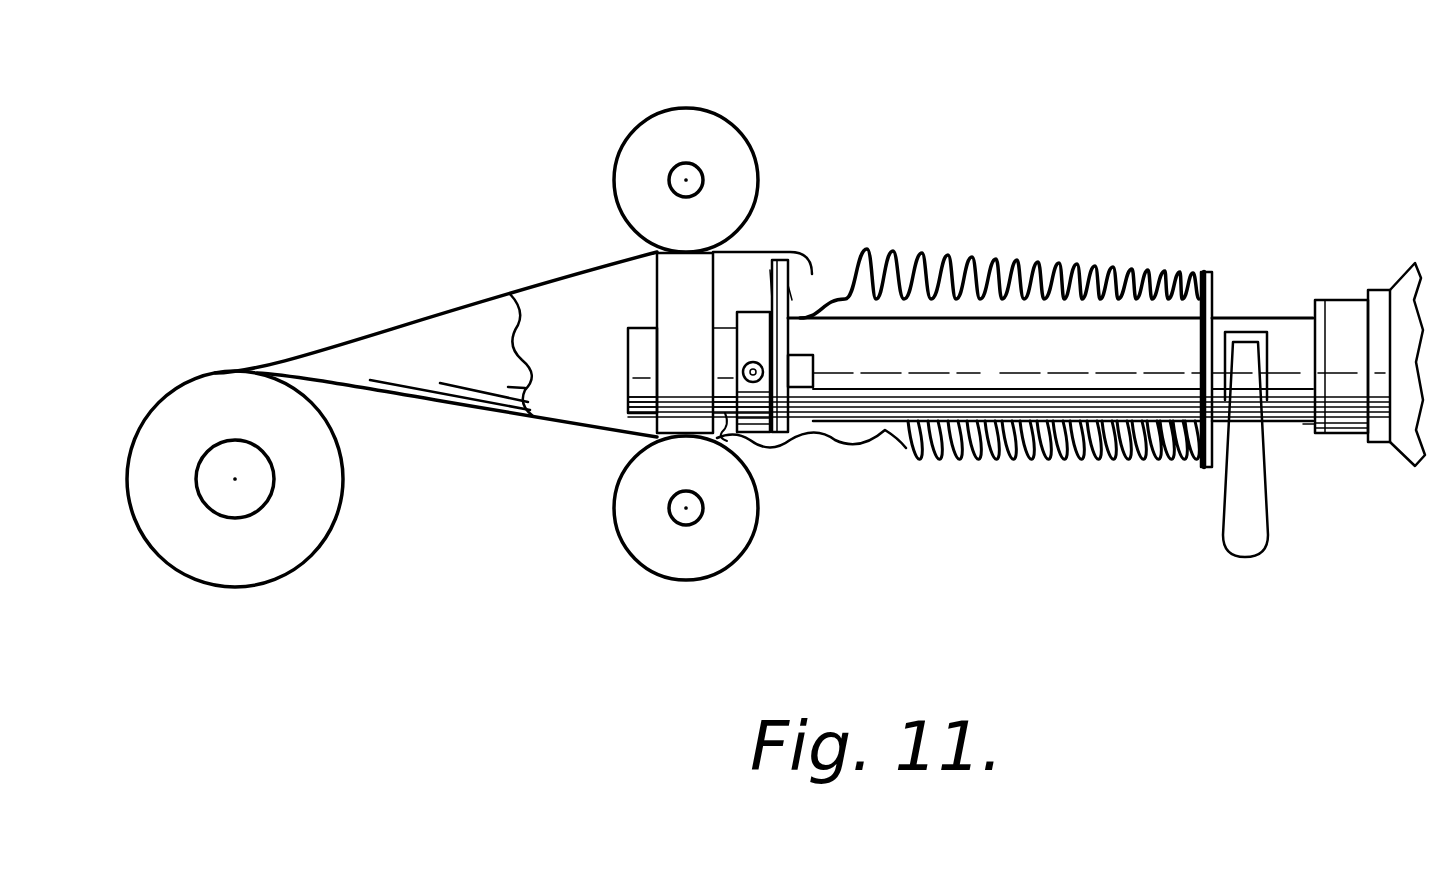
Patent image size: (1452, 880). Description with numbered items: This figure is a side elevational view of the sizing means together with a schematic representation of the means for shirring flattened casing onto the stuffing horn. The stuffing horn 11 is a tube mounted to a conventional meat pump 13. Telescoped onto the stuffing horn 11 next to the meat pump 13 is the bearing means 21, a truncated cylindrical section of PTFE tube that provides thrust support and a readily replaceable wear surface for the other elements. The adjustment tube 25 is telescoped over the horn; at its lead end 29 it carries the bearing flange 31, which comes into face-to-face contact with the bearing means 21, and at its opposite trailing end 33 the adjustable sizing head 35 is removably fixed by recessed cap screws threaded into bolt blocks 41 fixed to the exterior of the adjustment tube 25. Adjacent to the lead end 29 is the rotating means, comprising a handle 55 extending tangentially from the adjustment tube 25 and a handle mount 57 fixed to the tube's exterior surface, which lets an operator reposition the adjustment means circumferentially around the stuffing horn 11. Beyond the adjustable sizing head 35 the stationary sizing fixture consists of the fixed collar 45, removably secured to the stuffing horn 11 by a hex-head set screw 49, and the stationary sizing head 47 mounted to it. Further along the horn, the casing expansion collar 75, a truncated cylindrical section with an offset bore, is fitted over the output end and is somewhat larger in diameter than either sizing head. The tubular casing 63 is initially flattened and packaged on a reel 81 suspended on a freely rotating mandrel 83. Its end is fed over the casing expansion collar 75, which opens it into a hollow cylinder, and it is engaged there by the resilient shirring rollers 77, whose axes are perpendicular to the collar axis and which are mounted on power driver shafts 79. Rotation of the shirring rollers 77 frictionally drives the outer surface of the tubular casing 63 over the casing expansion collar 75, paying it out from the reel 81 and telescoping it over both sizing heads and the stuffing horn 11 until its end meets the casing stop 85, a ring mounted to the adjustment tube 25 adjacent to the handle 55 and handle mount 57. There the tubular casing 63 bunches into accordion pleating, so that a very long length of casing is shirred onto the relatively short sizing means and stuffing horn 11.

The stuffing horn 11 is at (628, 388).
The meat pump 13 is at (1390, 288).
The bearing means 21 is at (1350, 433).
The adjustment tube 25 is at (921, 455).
The lead end 29 is at (1311, 424).
The bearing flange 31 is at (1315, 300).
The trailing end 33 is at (822, 287).
The adjustable sizing head 35 is at (800, 277).
The bolt blocks 41 is at (813, 367).
The fixed collar 45 is at (760, 275).
The stationary sizing head 47 is at (790, 287).
The hex-head set screw 49 is at (745, 364).
The handle 55 is at (1233, 523).
The handle mount 57 is at (1268, 335).
The tubular casing 63 is at (745, 312).
The casing expansion collar 75 is at (673, 288).
The shirring rollers 77 is at (667, 120).
The power driver shafts 79 is at (670, 173).
The reel 81 is at (208, 372).
The mandrel 83 is at (222, 505).
The casing stop 85 is at (1208, 272).